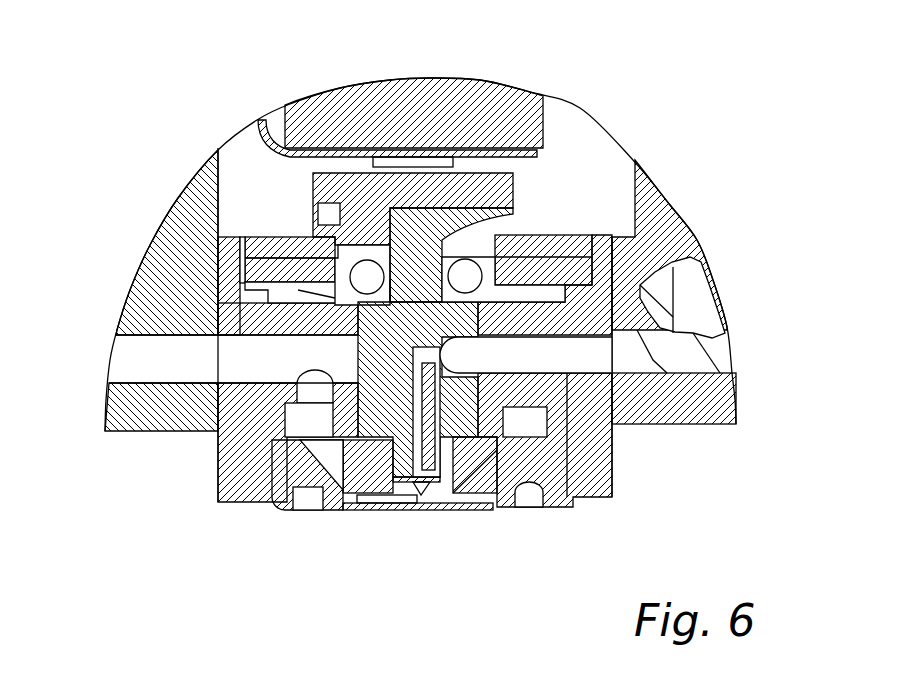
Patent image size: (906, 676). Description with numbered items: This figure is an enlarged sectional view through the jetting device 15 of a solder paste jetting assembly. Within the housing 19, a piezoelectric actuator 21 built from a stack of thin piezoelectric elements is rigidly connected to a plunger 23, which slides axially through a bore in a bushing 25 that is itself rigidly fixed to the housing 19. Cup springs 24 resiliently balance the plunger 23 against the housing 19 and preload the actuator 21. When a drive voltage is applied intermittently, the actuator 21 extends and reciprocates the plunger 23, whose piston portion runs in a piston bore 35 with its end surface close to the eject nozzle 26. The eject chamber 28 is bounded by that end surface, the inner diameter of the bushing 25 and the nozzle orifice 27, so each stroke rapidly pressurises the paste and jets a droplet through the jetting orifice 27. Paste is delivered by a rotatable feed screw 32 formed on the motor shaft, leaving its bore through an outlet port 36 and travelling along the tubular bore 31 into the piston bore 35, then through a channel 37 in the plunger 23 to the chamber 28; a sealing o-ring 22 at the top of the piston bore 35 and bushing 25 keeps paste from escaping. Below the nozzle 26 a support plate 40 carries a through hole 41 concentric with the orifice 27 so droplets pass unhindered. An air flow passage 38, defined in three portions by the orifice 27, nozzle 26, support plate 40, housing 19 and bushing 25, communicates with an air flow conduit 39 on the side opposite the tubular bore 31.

The jetting device 15 is at (190, 208).
The housing 19 is at (720, 395).
The piezoelectric actuator 21 is at (520, 104).
The sealing o-ring 22 is at (462, 278).
The plunger 23 is at (405, 300).
The cup springs 24 is at (697, 239).
The bushing 25 is at (346, 285).
The eject nozzle 26 is at (227, 503).
The jetting orifice 27 is at (425, 490).
The eject chamber 28 is at (440, 495).
The tubular bore 31 is at (606, 376).
The rotatable feed screw 32 is at (701, 291).
The piston bore 35 is at (417, 293).
The outlet port 36 is at (690, 358).
The channel 37 is at (575, 357).
The air flow passage 38 is at (312, 422).
The air flow conduit 39 is at (286, 358).
The support plate 40 is at (341, 510).
The through hole 41 is at (418, 507).